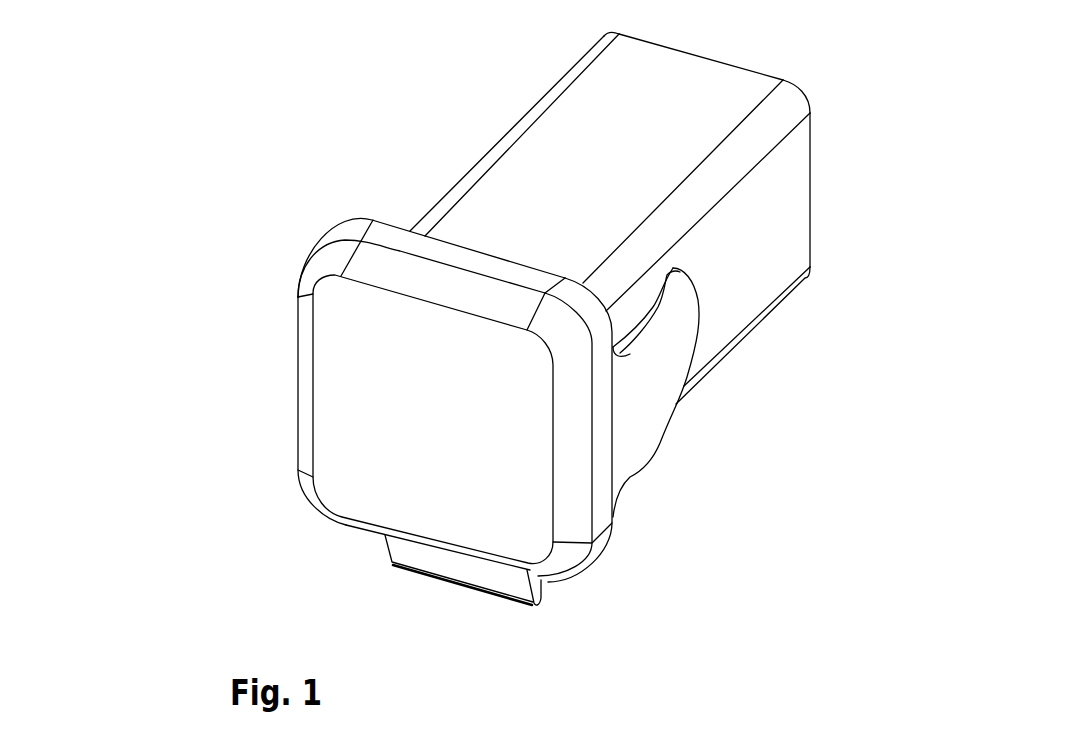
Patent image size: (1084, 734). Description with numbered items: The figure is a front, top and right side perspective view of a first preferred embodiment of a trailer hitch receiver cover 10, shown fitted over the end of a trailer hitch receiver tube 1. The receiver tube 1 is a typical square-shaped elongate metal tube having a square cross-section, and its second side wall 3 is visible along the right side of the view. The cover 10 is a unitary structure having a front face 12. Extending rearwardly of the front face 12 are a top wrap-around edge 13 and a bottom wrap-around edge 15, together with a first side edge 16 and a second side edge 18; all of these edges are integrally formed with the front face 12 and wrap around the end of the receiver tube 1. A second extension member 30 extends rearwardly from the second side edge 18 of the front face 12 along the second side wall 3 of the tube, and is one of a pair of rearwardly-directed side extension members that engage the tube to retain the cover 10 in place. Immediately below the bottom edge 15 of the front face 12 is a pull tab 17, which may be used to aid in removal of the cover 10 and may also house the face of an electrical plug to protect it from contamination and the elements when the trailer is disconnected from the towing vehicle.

The trailer hitch receiver cover 10 is at (200, 78).
The trailer hitch receiver tube 1 is at (703, 79).
The second side wall 3 is at (778, 227).
The second extension member 30 is at (672, 353).
The top wrap-around edge 13 is at (457, 256).
The first side edge 16 is at (306, 401).
The front face 12 is at (380, 440).
The second side edge 18 is at (580, 445).
The bottom wrap-around edge 15 is at (366, 528).
The pull tab 17 is at (480, 572).